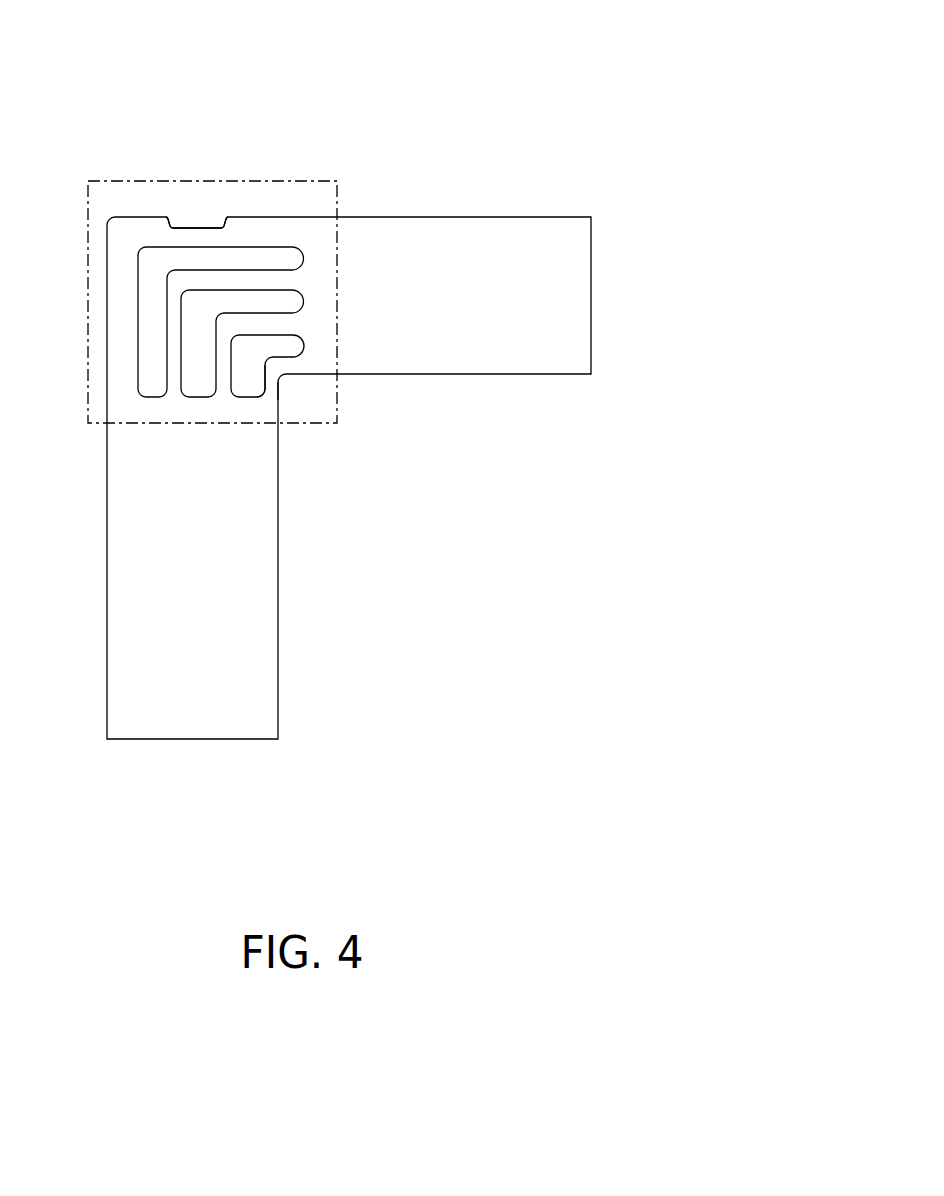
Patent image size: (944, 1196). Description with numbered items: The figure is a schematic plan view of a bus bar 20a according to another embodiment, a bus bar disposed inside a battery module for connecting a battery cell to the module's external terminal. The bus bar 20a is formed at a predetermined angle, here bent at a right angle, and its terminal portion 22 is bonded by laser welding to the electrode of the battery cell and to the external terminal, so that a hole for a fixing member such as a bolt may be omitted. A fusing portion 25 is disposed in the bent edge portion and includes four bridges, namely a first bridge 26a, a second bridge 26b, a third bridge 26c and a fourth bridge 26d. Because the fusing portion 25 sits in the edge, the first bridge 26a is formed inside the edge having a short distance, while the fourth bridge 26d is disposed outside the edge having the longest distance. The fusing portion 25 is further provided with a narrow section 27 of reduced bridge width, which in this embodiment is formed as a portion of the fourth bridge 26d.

The bus bar 20a is at (348, 44).
The terminal portion 22 is at (468, 358).
The fusing portion 25 is at (107, 181).
The narrow section 27 is at (193, 226).
The first bridge 26a is at (272, 381).
The second bridge 26b is at (223, 347).
The third bridge 26c is at (172, 302).
The fourth bridge 26d is at (100, 260).